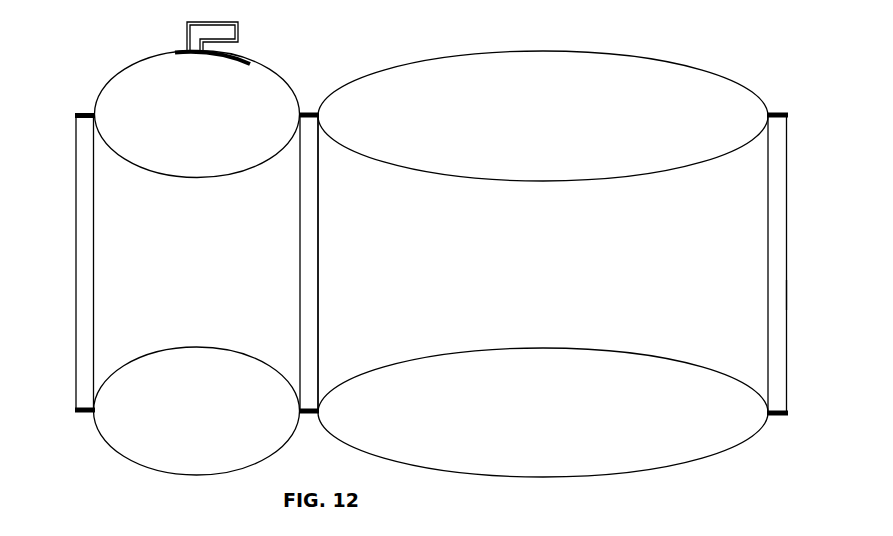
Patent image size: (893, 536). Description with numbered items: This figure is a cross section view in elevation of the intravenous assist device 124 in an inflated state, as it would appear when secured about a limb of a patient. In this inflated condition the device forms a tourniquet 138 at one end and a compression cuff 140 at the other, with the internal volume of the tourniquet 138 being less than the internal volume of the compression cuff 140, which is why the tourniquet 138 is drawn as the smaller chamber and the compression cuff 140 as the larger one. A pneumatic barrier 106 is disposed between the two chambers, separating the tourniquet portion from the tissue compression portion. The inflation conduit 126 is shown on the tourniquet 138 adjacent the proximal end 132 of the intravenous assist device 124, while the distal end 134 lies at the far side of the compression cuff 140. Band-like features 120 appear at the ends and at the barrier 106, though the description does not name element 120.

The pneumatic barrier 106 is at (303, 414).
The retaining ring 120 is at (75, 177).
The intravenous assist device 124 is at (594, 44).
The inflation conduit 126 is at (233, 41).
The proximal end 132 is at (68, 343).
The distal end 134 is at (792, 294).
The tourniquet 138 is at (161, 72).
The compression cuff 140 is at (697, 97).